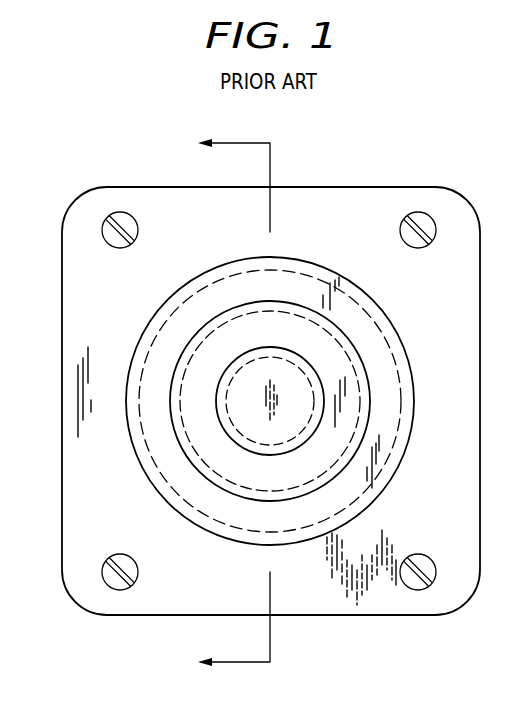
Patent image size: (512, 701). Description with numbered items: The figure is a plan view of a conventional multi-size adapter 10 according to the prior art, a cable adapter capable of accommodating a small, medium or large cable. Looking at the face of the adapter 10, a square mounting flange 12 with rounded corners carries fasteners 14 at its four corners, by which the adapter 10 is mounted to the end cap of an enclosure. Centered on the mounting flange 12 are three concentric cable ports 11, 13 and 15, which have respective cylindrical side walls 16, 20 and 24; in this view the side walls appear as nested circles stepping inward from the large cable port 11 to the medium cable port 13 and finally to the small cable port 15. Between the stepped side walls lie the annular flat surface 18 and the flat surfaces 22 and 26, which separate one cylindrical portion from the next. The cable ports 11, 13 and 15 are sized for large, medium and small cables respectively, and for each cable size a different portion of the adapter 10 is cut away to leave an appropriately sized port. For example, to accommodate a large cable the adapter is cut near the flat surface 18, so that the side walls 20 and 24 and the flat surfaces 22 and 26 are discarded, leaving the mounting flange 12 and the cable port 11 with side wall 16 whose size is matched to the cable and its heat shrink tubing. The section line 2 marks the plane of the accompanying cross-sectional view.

The section line 2- 2 is at (226, 403).
The multi-size adapter 10 is at (410, 160).
The cable port 11 is at (211, 540).
The mounting flange 12 is at (373, 618).
The cable port 13 is at (162, 367).
The fasteners 14 is at (107, 558).
The cable port 15 is at (207, 435).
The cylindrical side wall 16 is at (313, 540).
The flat surface 18 is at (382, 432).
The cylindrical side wall 20 is at (370, 402).
The flat surface 22 is at (333, 355).
The cylindrical side wall 24 is at (288, 351).
The flat surface 26 is at (250, 378).